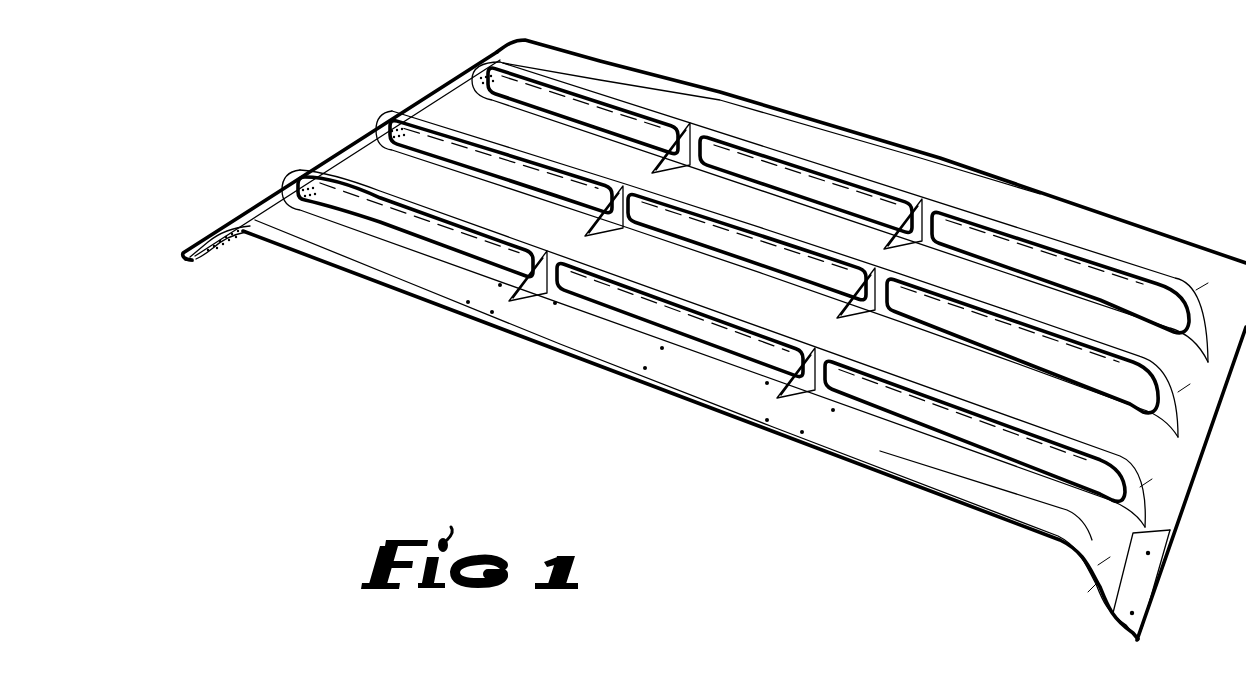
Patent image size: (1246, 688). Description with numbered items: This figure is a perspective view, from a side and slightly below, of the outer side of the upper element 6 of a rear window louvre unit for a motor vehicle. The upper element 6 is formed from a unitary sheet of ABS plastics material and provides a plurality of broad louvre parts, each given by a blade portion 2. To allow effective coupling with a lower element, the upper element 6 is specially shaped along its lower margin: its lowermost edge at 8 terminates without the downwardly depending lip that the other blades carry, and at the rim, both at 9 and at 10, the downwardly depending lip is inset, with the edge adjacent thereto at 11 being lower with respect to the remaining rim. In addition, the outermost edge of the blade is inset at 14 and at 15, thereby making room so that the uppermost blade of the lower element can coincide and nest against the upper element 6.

The blade portion 2 is at (592, 88).
The upper element 6 is at (1058, 205).
The lowermost edge 8 is at (557, 333).
The rim 9 is at (181, 263).
The rim 10 is at (1139, 638).
The edge adjacent the rim 11 is at (201, 259).
The inset outermost edge of blade 14 is at (236, 243).
The inset outermost edge of blade 15 is at (1103, 575).